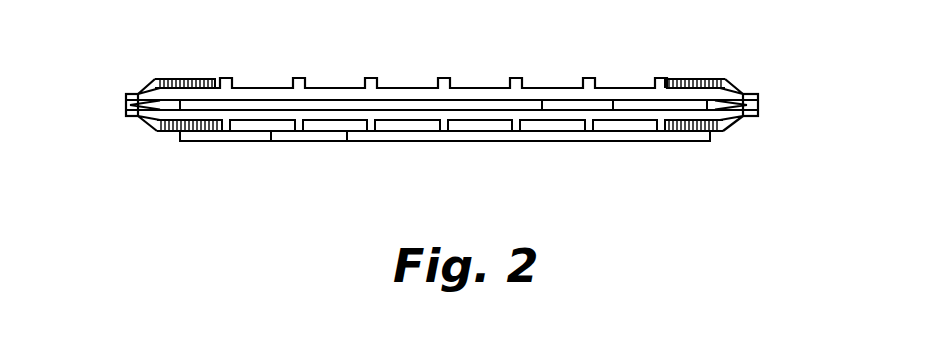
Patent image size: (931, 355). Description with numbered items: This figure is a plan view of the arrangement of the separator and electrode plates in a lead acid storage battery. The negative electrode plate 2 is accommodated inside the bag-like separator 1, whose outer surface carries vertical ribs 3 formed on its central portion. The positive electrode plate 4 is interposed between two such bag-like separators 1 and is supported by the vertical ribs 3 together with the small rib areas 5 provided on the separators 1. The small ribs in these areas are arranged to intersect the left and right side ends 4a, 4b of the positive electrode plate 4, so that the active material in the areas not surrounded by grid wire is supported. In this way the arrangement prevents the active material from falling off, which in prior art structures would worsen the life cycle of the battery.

The bag-like separator 1 is at (744, 92).
The negative electrode plate 2 is at (600, 103).
The vertical ribs 3 is at (439, 80).
The positive electrode plate 4 is at (397, 138).
The left side end of the positive electrode plate 4a is at (179, 137).
The right side end of the positive electrode plate 4b is at (712, 142).
The small rib areas 5 is at (174, 78).